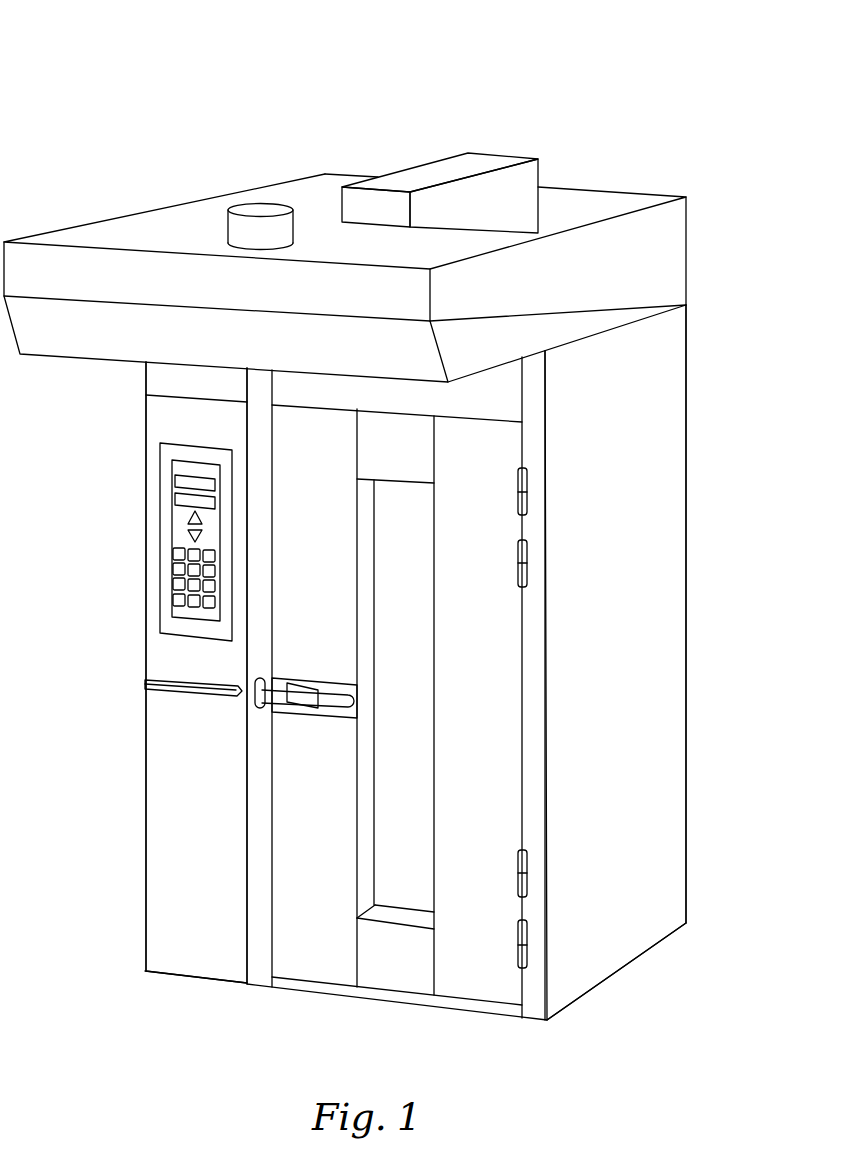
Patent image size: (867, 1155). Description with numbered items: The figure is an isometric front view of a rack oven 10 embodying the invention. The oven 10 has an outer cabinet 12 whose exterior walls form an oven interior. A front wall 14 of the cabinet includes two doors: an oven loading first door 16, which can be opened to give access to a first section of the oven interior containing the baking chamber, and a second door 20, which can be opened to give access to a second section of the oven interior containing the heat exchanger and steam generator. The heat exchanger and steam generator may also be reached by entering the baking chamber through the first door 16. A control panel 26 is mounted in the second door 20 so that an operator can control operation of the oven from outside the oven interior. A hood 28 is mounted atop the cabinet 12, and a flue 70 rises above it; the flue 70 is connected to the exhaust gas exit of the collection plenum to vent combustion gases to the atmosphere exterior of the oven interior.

The rack oven 10 is at (679, 80).
The outer cabinet 12 is at (667, 503).
The front wall 14 is at (160, 758).
The first door 16 is at (487, 690).
The second door 20 is at (160, 655).
The control panel 26 is at (170, 533).
The hood 28 is at (667, 256).
The flue 70 is at (236, 229).